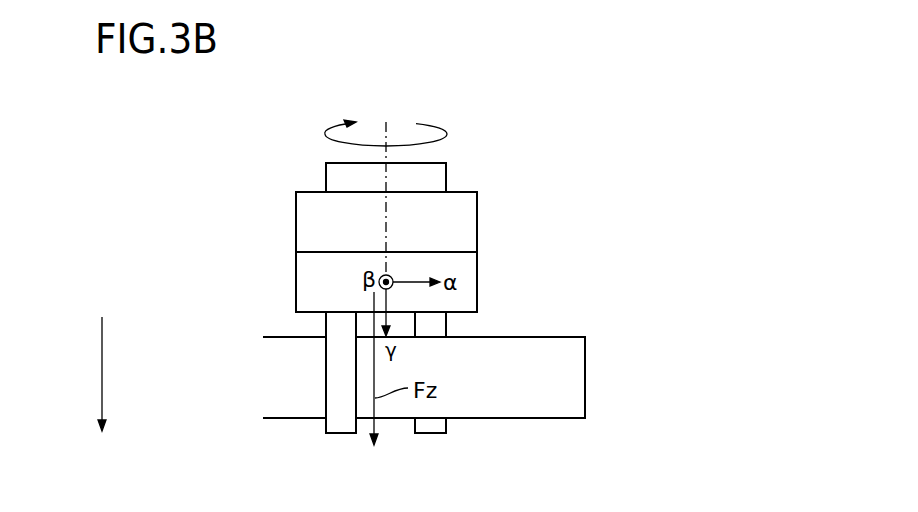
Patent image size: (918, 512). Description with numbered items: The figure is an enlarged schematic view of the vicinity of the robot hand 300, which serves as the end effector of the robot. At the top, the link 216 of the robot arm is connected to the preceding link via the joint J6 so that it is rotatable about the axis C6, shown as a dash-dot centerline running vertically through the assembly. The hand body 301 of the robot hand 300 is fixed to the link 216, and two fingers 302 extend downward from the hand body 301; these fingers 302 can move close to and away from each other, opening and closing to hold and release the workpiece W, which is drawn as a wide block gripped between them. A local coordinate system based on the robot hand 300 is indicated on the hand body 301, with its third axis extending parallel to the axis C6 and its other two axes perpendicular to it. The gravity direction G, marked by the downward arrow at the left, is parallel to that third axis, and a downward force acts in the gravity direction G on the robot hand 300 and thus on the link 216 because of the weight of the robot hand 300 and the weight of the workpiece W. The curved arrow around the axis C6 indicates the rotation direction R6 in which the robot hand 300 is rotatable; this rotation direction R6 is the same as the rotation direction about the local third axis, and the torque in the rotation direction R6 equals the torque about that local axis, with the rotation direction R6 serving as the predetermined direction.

The link 216 is at (296, 210).
The robot hand 300 is at (353, 218).
The hand body 301 is at (478, 261).
The fingers 302 is at (340, 387).
The workpiece W is at (585, 378).
The gravity direction G is at (100, 365).
The joint J6 is at (325, 172).
The axis C6 is at (388, 122).
The rotation direction R6 is at (338, 125).